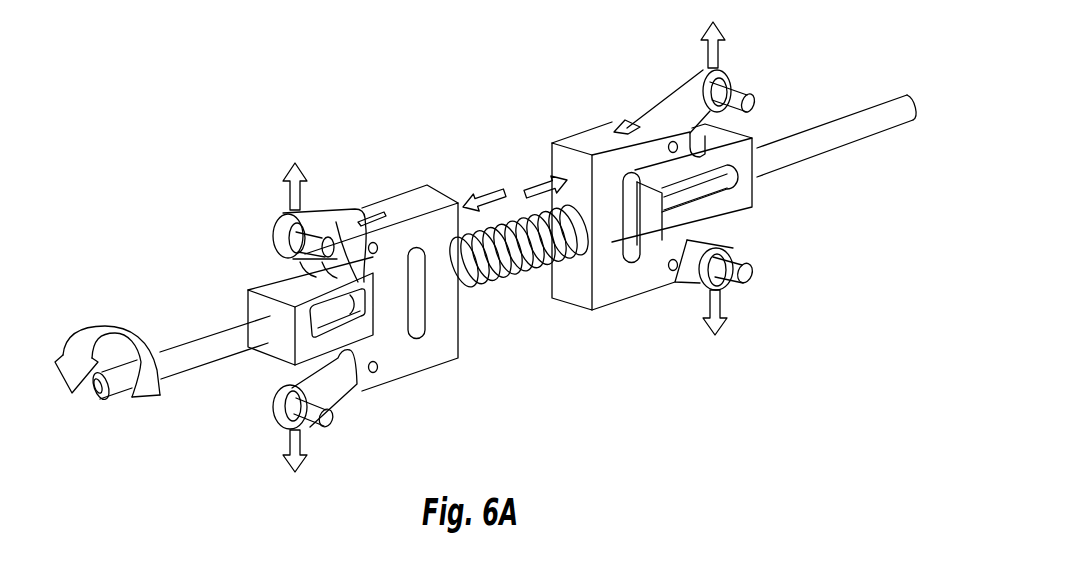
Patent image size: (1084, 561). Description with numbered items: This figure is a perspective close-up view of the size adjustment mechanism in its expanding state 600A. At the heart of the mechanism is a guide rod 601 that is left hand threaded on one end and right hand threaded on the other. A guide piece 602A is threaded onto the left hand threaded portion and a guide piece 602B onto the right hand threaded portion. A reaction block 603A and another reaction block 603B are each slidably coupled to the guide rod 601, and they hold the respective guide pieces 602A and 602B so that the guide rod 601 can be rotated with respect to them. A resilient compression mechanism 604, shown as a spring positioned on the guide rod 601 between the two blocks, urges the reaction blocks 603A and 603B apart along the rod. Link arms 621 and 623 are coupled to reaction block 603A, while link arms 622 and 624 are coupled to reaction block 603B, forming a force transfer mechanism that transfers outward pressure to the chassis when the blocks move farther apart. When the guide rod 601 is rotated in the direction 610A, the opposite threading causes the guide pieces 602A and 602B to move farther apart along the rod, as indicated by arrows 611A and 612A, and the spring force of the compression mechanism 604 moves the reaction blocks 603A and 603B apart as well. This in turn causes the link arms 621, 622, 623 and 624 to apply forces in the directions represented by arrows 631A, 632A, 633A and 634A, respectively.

The expanding state 600A is at (495, 61).
The guide rod 601 is at (93, 390).
The rotation direction 610A is at (138, 340).
The reaction block 603A is at (408, 201).
The guide piece 602A is at (387, 300).
The link arm 621 is at (328, 216).
The link arm 623 is at (347, 395).
The force direction arrow 631A is at (287, 191).
The force direction arrow 633A is at (287, 448).
The guide piece movement arrow 611A is at (482, 193).
The guide piece movement arrow 612A is at (543, 170).
The resilient compression mechanism 604 is at (508, 258).
The reaction block 603B is at (582, 142).
The guide piece 602B is at (647, 212).
The link arm 622 is at (680, 93).
The link arm 624 is at (693, 283).
The force direction arrow 632A is at (727, 43).
The force direction arrow 634A is at (728, 305).